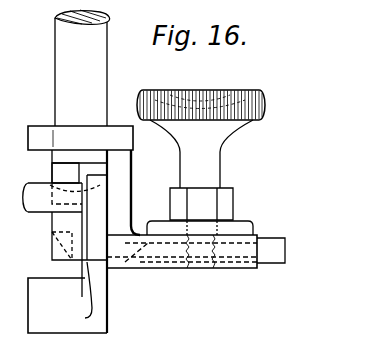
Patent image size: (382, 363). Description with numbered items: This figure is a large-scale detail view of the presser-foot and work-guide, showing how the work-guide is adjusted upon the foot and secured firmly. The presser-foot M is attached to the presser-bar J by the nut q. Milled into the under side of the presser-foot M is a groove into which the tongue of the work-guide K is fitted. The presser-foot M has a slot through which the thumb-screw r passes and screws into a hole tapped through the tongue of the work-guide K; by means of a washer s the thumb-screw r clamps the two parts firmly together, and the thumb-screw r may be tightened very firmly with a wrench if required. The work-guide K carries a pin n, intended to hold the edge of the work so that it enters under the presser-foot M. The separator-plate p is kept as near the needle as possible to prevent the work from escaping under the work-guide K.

The presser-bar J is at (82, 68).
The nut q is at (65, 173).
The pin n is at (61, 197).
The work-guide K is at (97, 217).
The presser-foot M is at (196, 251).
The thumb-screw r is at (201, 139).
The washer s is at (200, 228).
The separator-plate p is at (67, 297).